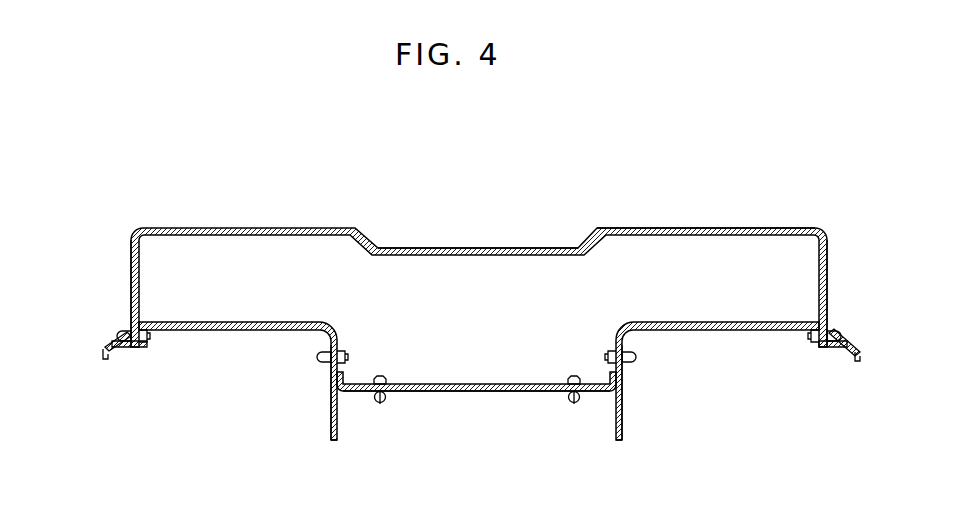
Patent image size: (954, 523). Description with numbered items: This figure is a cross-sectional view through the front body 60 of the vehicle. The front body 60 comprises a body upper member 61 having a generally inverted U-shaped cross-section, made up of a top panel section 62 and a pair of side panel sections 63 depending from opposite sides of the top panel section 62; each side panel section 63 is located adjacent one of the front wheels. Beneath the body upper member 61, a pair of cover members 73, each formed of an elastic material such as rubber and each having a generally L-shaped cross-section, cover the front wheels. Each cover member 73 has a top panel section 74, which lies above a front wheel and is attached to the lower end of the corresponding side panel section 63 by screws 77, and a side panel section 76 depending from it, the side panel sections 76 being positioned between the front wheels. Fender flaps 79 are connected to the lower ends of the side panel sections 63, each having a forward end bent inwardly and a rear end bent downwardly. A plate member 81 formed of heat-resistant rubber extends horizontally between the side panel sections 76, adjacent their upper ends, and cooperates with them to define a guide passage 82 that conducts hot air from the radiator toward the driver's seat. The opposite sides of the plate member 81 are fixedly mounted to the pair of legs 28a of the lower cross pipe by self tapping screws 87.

The front body 60 is at (441, 238).
The body upper member 61 is at (712, 226).
The top panel section 62 is at (505, 247).
The side panel sections 63 is at (130, 262).
The cover members 73 is at (329, 414).
The top panel section 74 is at (257, 322).
The side panel section 76 is at (333, 434).
The screws 77 is at (127, 333).
The fender flaps 79 is at (102, 350).
The plate member 81 is at (485, 384).
The guide passage 82 is at (453, 415).
The self tapping screws 87 is at (381, 377).
The legs 28a is at (379, 403).